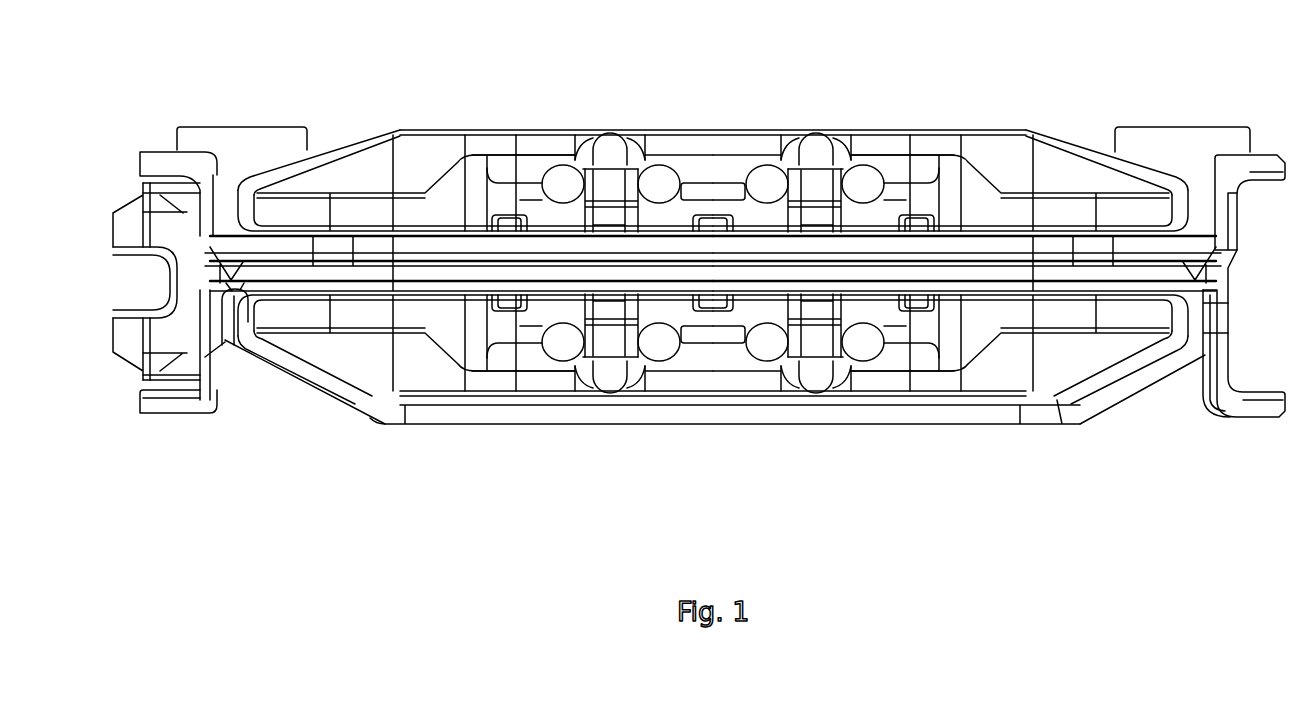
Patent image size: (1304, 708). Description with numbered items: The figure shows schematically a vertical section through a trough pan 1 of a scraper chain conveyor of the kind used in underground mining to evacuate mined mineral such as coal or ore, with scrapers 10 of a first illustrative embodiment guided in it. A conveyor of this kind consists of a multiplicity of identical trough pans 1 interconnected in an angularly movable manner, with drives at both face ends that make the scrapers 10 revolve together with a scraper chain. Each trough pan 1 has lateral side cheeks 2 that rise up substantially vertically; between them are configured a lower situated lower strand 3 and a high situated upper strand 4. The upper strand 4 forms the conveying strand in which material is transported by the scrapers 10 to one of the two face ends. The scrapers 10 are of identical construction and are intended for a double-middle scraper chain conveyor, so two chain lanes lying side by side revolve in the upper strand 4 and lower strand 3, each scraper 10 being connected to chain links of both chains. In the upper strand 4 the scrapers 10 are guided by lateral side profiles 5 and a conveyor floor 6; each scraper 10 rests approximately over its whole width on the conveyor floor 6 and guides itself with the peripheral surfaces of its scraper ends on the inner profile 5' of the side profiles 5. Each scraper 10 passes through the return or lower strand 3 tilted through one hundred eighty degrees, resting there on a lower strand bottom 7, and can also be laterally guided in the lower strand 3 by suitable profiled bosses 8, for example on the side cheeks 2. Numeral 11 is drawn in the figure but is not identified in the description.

The trough pan 1 is at (358, 440).
The side cheeks 2 is at (178, 403).
The lower strand 3 is at (729, 385).
The upper strand 4 is at (1075, 118).
The side profiles 5 is at (713, 90).
The inner profile 5' is at (319, 111).
The conveyor floor 6 is at (372, 244).
The lower strand bottom 7 is at (578, 413).
The profiled bosses 8 is at (229, 308).
The scrapers 10 is at (496, 117).
The clover-shaped chamber 11 is at (714, 156).